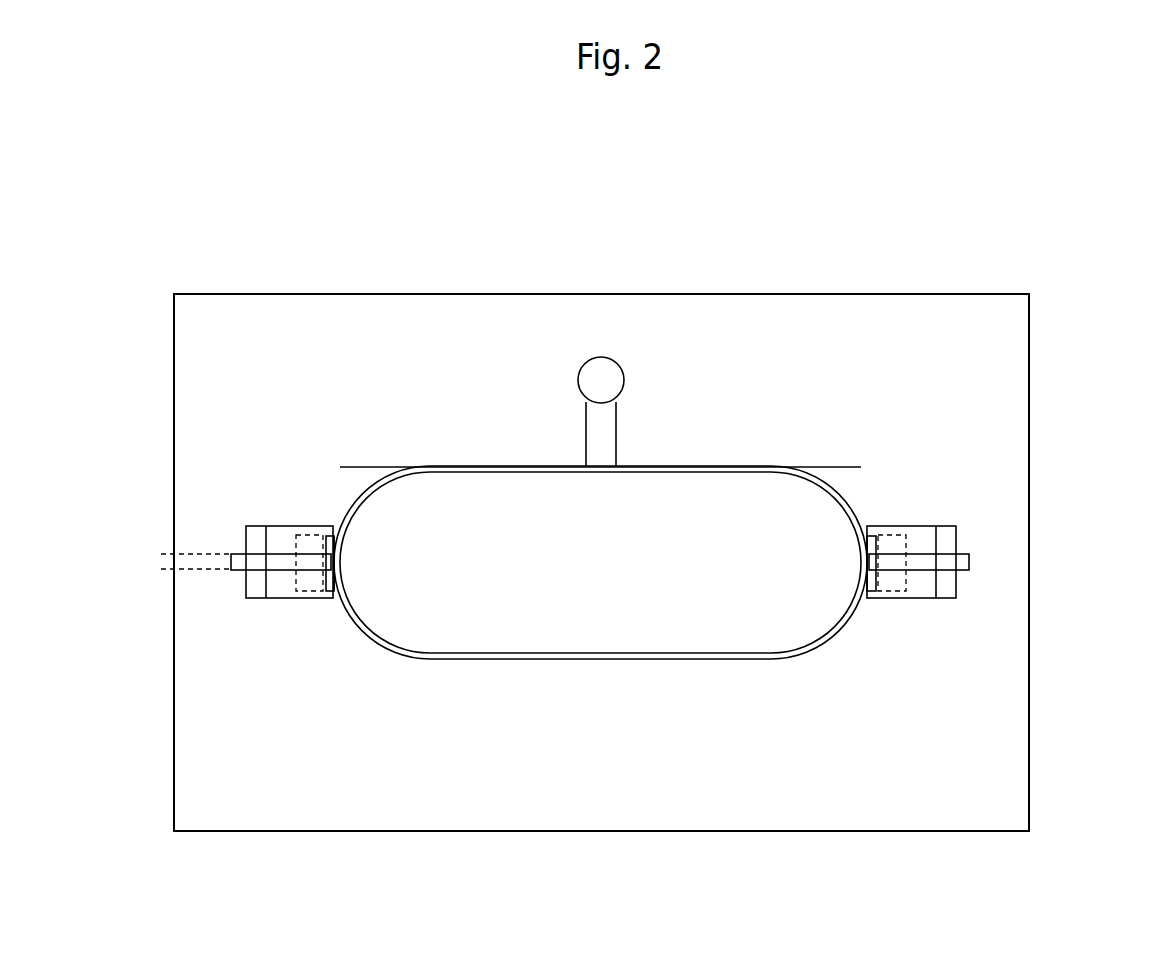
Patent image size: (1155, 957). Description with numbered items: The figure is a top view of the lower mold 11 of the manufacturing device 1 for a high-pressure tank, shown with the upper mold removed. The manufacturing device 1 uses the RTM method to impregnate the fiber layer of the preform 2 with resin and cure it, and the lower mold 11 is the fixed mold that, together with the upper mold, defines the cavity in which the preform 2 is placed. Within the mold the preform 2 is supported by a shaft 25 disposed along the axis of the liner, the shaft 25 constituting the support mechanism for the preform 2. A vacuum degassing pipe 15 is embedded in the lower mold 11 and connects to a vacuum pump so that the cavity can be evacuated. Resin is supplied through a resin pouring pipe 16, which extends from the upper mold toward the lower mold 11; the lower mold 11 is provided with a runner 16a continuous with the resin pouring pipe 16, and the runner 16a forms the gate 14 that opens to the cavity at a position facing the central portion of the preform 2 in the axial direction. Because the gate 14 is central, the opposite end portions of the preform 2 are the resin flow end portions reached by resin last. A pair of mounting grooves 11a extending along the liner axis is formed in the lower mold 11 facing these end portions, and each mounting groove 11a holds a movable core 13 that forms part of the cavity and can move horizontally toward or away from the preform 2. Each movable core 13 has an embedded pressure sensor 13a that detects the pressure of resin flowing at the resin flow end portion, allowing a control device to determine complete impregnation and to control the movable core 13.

The manufacturing device 1 is at (988, 213).
The preform 2 is at (658, 618).
The lower mold 11 is at (997, 745).
The mounting groove 11a is at (258, 533).
The movable core 13 is at (282, 582).
The pressure sensor 13a is at (314, 597).
The gate 14 is at (596, 477).
The vacuum degassing pipe 15 is at (210, 556).
The resin pouring pipe 16 is at (584, 378).
The runner 16a is at (598, 428).
The shaft 25 is at (966, 570).